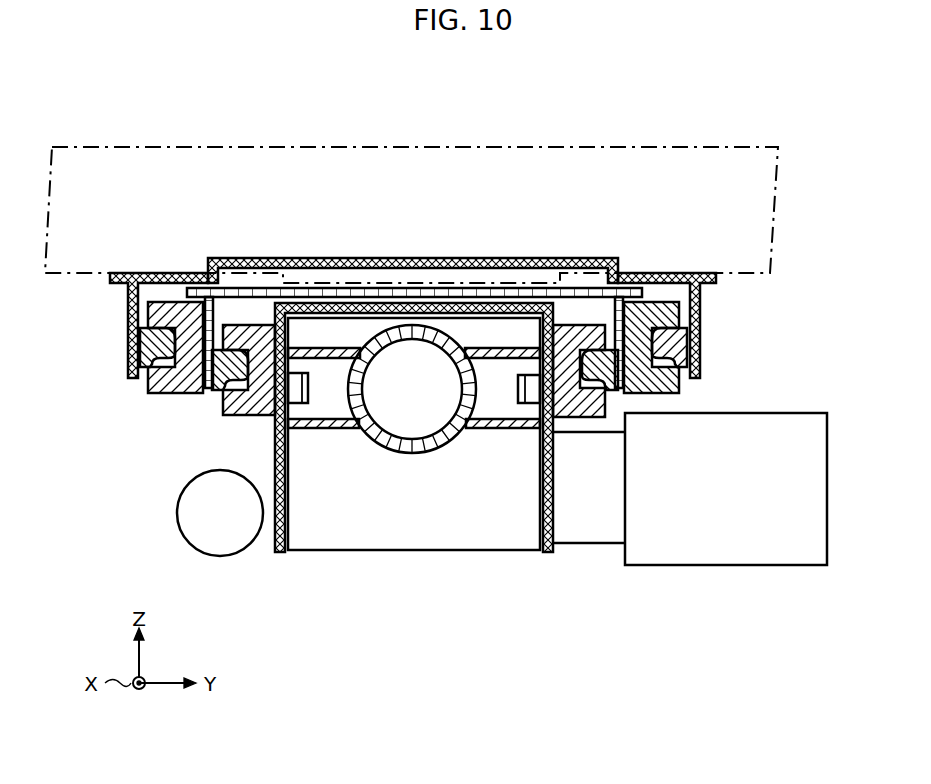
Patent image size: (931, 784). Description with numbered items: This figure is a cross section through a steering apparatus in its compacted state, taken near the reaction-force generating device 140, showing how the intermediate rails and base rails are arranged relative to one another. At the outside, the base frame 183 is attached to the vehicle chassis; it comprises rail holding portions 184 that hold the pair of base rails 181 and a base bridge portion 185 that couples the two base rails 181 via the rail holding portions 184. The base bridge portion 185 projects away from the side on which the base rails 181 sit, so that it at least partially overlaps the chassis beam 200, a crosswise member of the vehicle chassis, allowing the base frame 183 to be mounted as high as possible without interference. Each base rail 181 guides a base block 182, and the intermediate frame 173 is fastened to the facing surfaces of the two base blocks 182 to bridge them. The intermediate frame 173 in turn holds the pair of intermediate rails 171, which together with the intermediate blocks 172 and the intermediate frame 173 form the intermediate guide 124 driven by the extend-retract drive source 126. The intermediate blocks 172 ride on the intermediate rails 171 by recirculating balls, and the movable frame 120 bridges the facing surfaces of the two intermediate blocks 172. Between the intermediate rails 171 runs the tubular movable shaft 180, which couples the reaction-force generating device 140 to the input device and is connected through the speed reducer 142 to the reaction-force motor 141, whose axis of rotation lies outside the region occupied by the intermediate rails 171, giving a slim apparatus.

The chassis beam 200 is at (476, 146).
The rail holding portions 184 is at (158, 277).
The intermediate guide 124 is at (246, 289).
The base bridge portion 185 is at (375, 258).
The movable frame 120 is at (497, 310).
The intermediate frame 173 is at (589, 288).
The base frame 183 is at (680, 277).
The base blocks 182 is at (157, 330).
The base rails 181 is at (152, 352).
The intermediate rails 171 is at (222, 383).
The intermediate blocks 172 is at (250, 416).
The movable shaft 180 is at (412, 455).
The extend-retract drive source 126 is at (237, 557).
The speed reducer 142 is at (352, 552).
The reaction-force generating device 140 is at (437, 606).
The reaction-force motor 141 is at (685, 566).